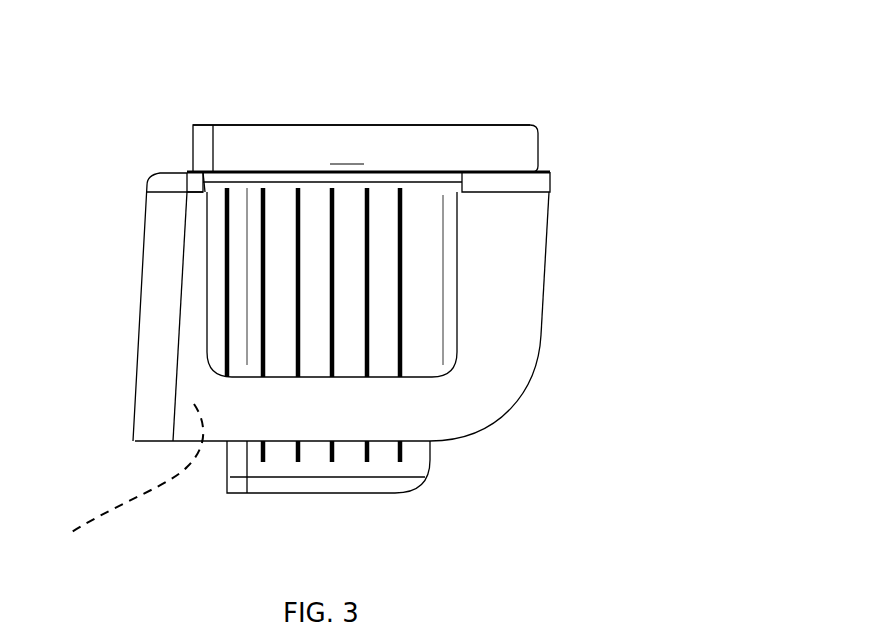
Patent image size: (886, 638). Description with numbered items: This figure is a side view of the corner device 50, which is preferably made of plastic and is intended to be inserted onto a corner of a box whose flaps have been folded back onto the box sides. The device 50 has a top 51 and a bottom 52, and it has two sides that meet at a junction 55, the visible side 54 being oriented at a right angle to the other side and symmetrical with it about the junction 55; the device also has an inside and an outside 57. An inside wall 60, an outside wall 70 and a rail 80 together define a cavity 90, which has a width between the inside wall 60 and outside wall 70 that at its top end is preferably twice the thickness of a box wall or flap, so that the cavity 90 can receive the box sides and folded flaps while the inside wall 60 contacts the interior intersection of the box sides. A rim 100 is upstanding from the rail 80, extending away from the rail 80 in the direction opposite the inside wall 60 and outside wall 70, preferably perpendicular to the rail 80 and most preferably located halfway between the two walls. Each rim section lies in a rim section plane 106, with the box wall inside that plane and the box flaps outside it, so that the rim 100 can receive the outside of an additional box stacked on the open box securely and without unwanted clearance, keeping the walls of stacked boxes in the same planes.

The corner device 50 is at (605, 238).
The top 51 is at (337, 125).
The bottom 52 is at (275, 495).
The side 54 is at (548, 229).
The junction 55 is at (153, 180).
The outside 57 is at (187, 387).
The inside wall 60 is at (383, 213).
The outside wall 70 is at (500, 327).
The rail 80 is at (547, 165).
The cavity 90 is at (114, 474).
The rim 100 is at (262, 125).
The rim section plane 106 is at (347, 153).